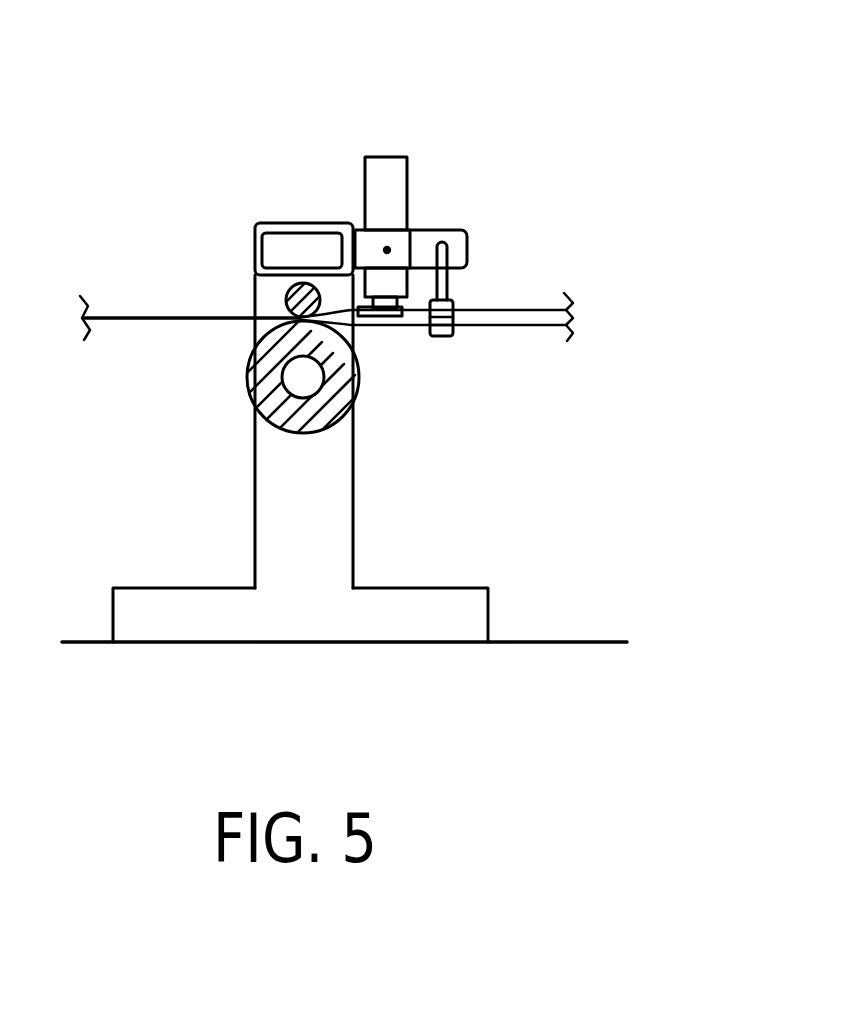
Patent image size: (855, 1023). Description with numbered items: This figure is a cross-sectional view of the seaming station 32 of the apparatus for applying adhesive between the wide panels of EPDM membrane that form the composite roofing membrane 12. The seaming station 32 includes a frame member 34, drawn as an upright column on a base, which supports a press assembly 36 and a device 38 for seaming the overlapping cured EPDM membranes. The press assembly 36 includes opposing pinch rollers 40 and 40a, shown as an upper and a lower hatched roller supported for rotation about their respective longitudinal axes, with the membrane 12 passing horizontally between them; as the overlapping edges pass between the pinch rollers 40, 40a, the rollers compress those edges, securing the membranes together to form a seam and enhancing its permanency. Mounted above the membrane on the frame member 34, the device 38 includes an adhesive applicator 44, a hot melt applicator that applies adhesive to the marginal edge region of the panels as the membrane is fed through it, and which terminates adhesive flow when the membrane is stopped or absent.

The composite roofing membrane 12 is at (138, 316).
The seaming station 32 is at (392, 122).
The frame member 34 is at (343, 531).
The press assembly 36 is at (218, 393).
The device for seaming 38 is at (487, 213).
The pinch roller 40 is at (290, 293).
The pinch roller 40a is at (356, 402).
The adhesive applicator 44 is at (401, 197).